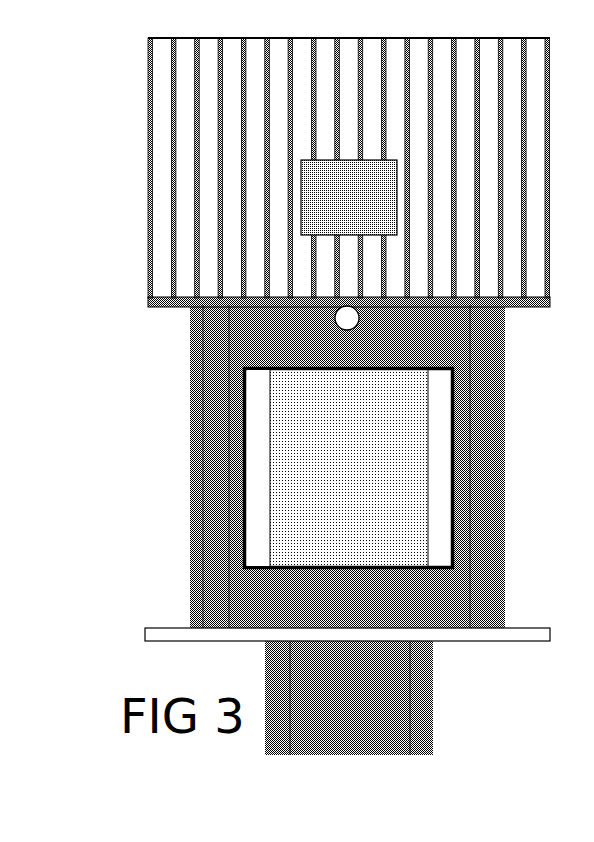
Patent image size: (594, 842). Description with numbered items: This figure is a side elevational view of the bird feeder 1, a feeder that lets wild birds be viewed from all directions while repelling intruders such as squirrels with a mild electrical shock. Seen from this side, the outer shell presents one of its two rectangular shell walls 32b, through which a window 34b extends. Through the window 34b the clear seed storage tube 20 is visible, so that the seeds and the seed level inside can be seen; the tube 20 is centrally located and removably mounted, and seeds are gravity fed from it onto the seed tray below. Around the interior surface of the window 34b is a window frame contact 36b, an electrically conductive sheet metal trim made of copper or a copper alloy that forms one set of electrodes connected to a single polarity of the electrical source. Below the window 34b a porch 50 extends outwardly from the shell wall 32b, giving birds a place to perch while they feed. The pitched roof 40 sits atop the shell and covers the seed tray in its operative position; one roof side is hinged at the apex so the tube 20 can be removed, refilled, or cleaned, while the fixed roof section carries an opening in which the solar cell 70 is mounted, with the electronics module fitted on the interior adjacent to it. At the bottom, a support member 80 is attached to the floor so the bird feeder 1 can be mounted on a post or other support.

The bird feeder 1 is at (295, 396).
The pitched roof 40 is at (157, 144).
The solar cell 70 is at (298, 189).
The shell wall 32b is at (222, 381).
The window 34b is at (258, 440).
The seed storage tube 20 is at (335, 480).
The window frame contact 36b is at (245, 513).
The porch 50 is at (150, 632).
The support member 80 is at (413, 707).